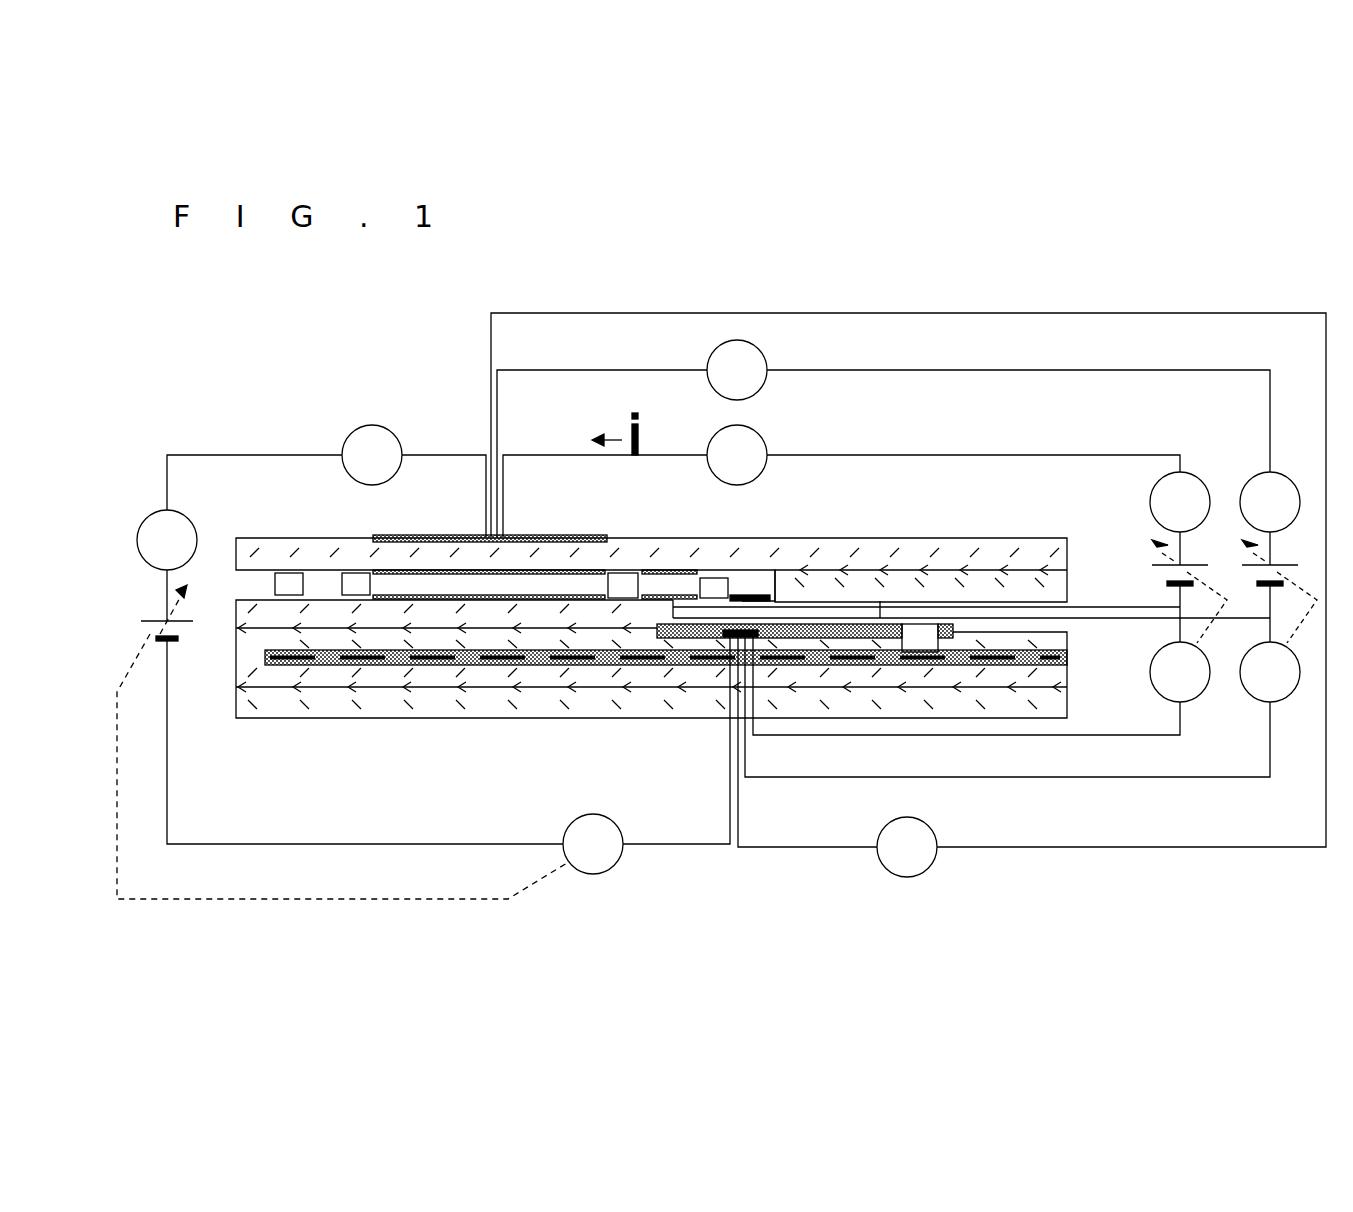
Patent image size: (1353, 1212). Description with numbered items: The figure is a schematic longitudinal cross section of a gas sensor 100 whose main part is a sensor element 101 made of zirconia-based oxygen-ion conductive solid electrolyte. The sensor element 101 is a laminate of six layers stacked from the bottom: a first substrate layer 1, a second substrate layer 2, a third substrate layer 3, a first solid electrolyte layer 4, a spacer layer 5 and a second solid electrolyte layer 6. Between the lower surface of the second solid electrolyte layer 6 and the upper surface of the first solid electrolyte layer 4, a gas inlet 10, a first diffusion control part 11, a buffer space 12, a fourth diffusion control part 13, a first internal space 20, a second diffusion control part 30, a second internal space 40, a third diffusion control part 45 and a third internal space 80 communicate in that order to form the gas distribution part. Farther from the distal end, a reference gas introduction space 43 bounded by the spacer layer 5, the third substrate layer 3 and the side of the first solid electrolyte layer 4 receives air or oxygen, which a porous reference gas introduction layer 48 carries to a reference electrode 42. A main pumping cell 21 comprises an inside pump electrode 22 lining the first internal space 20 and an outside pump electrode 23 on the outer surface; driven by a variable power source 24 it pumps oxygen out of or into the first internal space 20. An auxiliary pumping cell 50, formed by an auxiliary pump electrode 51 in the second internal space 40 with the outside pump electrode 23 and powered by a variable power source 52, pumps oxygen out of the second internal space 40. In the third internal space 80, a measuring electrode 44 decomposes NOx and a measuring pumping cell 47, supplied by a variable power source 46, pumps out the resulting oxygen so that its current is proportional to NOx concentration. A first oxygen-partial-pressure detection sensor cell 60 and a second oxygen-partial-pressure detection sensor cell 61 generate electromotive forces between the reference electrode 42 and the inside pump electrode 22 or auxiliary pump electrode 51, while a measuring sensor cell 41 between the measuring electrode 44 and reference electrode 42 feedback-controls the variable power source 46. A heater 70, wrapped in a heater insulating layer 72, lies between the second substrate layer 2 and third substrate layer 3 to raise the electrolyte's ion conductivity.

The first substrate layer 1 is at (245, 699).
The second substrate layer 2 is at (245, 671).
The third substrate layer 3 is at (245, 643).
The first solid electrolyte layer 4 is at (245, 610).
The spacer layer 5 is at (1058, 590).
The second solid electrolyte layer 6 is at (1058, 556).
The gas inlet 10 is at (250, 580).
The first diffusion control part 11 is at (287, 580).
The buffer space 12 is at (323, 583).
The fourth diffusion control part 13 is at (357, 580).
The first internal space 20 is at (400, 572).
The main pumping cell 21 is at (617, 545).
The inside pump electrode 22 is at (425, 600).
The outside pump electrode 23 is at (540, 536).
The variable power source 24 is at (150, 632).
The second diffusion control part 30 is at (622, 583).
The second internal space 40 is at (712, 585).
The measuring sensor cell 41 is at (722, 632).
The reference electrode 42 is at (727, 640).
The reference gas introduction space 43 is at (1057, 627).
The measuring electrode 44 is at (748, 613).
The third diffusion control part 45 is at (745, 595).
The variable power source 46 is at (1192, 565).
The measuring pumping cell 47 is at (788, 556).
The reference gas introduction layer 48 is at (838, 720).
The auxiliary pumping cell 50 is at (650, 554).
The auxiliary pump electrode 51 is at (692, 583).
The variable power source 52 is at (1282, 565).
The first oxygen-partial-pressure detection sensor cell 60 is at (610, 616).
The second oxygen-partial-pressure detection sensor cell 61 is at (648, 616).
The heater 70 is at (300, 660).
The heater insulating layer 72 is at (270, 665).
The third internal space 80 is at (778, 584).
The gas sensor 100 is at (232, 366).
The sensor element 101 is at (840, 540).